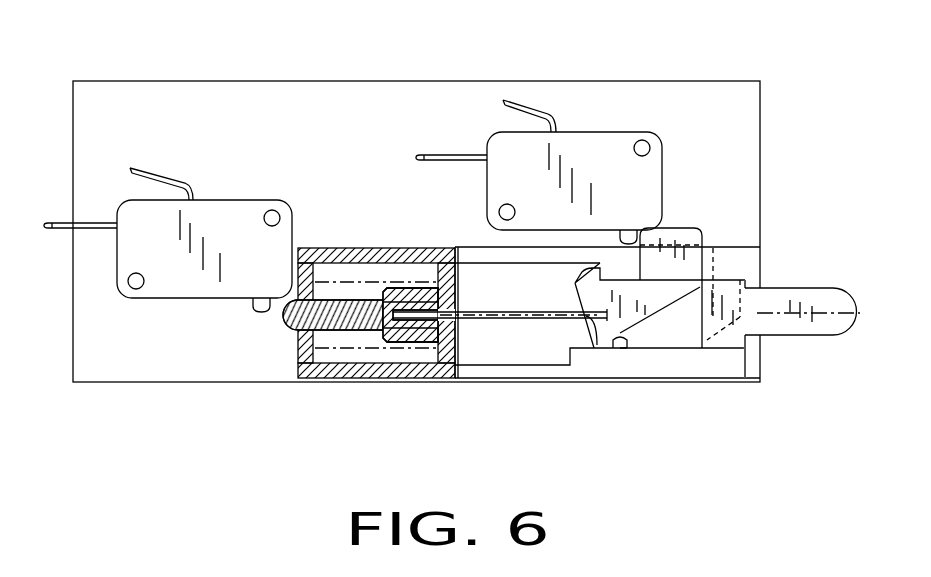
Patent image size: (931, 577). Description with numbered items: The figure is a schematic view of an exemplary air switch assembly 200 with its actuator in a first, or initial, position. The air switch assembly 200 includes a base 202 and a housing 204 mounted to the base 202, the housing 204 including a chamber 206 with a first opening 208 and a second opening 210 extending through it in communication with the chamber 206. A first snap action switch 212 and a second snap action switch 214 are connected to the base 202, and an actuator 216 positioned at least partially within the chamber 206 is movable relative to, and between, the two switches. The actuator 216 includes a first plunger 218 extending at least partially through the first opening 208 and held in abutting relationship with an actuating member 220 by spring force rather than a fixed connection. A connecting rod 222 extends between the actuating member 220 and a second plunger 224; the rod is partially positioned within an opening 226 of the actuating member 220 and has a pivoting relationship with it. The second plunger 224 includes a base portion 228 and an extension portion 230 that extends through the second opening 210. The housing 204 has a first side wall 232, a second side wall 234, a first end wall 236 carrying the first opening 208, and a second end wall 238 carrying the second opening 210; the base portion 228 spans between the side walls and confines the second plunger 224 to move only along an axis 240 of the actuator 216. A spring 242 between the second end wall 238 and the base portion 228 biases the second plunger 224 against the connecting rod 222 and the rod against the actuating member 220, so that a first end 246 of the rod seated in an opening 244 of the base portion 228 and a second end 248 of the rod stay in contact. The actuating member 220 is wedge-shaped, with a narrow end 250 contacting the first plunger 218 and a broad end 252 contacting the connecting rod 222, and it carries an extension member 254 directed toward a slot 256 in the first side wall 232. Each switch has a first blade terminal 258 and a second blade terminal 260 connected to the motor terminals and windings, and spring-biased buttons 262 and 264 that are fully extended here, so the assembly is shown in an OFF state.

The air switch assembly 200 is at (296, 66).
The base 202 is at (712, 110).
The housing 204 is at (298, 367).
The chamber 206 is at (547, 348).
The first opening 208 is at (785, 290).
The second opening 210 is at (283, 326).
The first snap action switch 212 is at (489, 125).
The second snap action switch 214 is at (106, 197).
The actuator 216 is at (495, 290).
The first plunger 218 is at (782, 345).
The actuating member 220 is at (623, 314).
The connecting rod 222 is at (509, 332).
The second plunger 224 is at (392, 332).
The opening 226 is at (577, 293).
The base portion 228 is at (458, 345).
The extension portion 230 is at (325, 330).
The first side wall 232 is at (330, 257).
The second side wall 234 is at (693, 368).
The first end wall 236 is at (770, 288).
The second end wall 238 is at (298, 348).
The axis 240 is at (853, 313).
The spring 242 is at (356, 358).
The opening 244 is at (410, 298).
The first end 246 is at (392, 302).
The second end 248 is at (576, 284).
The narrow end 250 is at (722, 380).
The broad end 252 is at (597, 308).
The extension member 254 is at (675, 240).
The slot 256 is at (710, 250).
The first blade terminal 258 is at (97, 232).
The second blade terminal 260 is at (165, 176).
The button 262 is at (627, 243).
The button 264 is at (252, 310).